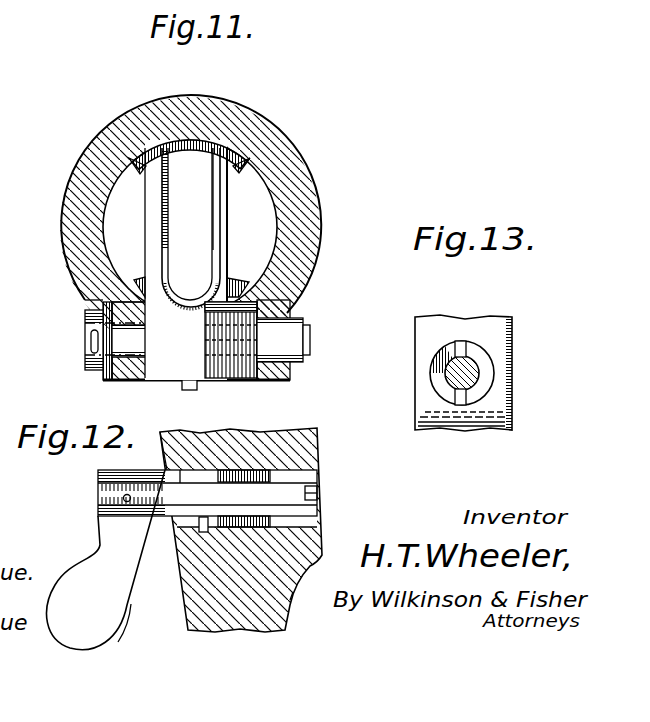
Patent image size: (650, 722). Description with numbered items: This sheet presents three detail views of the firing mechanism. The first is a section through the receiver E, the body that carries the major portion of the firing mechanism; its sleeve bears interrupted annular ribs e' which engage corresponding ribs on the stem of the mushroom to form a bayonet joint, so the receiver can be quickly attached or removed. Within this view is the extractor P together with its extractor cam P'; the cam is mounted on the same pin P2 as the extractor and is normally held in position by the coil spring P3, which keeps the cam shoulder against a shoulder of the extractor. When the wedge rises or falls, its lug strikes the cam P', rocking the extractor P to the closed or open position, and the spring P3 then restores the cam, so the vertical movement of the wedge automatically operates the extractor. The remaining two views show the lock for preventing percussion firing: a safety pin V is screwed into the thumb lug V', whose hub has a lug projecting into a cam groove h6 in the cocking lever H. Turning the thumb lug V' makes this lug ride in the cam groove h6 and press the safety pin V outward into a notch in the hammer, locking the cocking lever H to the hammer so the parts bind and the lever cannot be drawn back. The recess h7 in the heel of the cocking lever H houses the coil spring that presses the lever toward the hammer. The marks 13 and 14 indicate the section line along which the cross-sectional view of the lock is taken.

In FIG. 11, the receiver E is at (288, 156).
In FIG. 11, the interrupted annular ribs e' is at (200, 189).
In FIG. 11, the extractor P is at (186, 260).
In FIG. 11, the extractor cam P' is at (273, 330).
In FIG. 11, the pin P2 is at (273, 347).
In FIG. 11, the coil spring P3 is at (256, 379).
In FIG. 12, the corner of block 13 is at (170, 409).
In FIG. 12, the cam groove h6 is at (180, 477).
In FIG. 13, the cam groove h6 is at (462, 347).
In FIG. 12, the recess h7 is at (183, 527).
In FIG. 13, the recess h7 is at (437, 373).
In FIG. 12, the safety pin V is at (215, 520).
In FIG. 13, the safety pin V is at (486, 365).
In FIG. 12, the thumb lug V' is at (106, 560).
In FIG. 12, the pin 14 is at (203, 534).
In FIG. 12, the cocking lever H is at (205, 605).
In FIG. 13, the cocking lever H is at (487, 413).